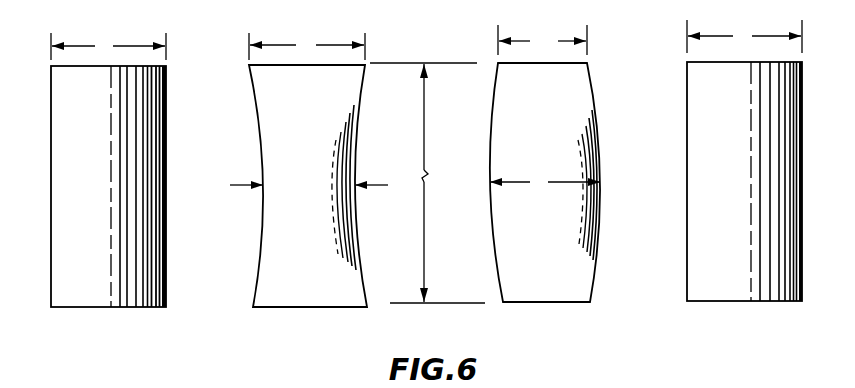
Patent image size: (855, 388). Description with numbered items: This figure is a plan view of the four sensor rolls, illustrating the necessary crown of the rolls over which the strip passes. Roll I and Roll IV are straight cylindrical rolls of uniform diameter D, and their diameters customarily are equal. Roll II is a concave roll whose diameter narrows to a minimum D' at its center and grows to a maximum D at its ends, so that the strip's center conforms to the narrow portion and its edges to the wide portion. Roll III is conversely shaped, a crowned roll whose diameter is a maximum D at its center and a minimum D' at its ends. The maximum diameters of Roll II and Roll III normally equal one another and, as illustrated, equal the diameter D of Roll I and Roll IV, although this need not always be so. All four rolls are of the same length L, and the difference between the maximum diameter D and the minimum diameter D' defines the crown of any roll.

The Roll I is at (108, 208).
The Roll II is at (308, 207).
The Roll III is at (545, 205).
The Roll IV is at (744, 204).
The maximum diameter D is at (426, 106).
The minimum diameter D' is at (408, 110).
The roll length L is at (427, 183).